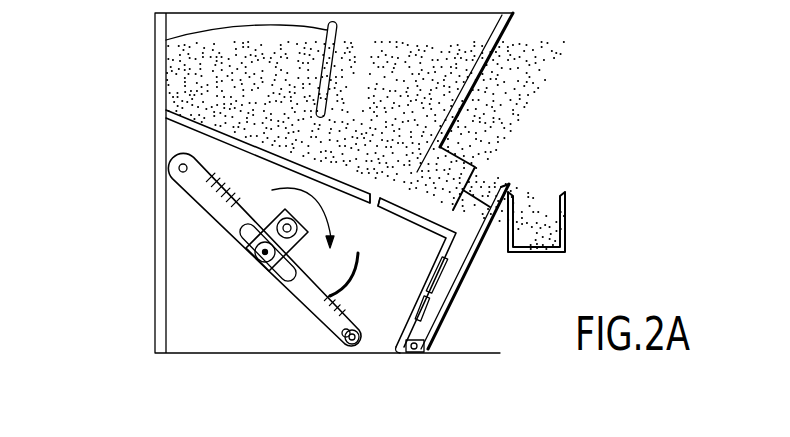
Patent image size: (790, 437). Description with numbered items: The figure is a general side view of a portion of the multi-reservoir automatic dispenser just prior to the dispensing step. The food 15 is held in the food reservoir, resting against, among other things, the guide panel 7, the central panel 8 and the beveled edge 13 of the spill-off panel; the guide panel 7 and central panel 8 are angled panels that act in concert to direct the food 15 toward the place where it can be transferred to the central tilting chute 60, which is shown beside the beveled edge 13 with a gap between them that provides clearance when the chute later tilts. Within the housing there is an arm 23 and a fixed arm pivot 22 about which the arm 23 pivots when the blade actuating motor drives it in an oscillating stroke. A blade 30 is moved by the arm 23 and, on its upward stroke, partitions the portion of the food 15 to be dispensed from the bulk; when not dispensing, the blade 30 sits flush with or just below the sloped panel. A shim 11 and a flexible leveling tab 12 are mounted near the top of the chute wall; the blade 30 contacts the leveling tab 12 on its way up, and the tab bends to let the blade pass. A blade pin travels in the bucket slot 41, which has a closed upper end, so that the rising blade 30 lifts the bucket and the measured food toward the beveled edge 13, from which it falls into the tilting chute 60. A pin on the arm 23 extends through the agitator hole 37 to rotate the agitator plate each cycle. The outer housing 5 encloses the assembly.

The housing 5 is at (155, 283).
The guide panel 7 is at (165, 40).
The central panel 8 is at (497, 48).
The shim 11 is at (462, 150).
The flexible leveling tab 12 is at (480, 186).
The beveled edge 13 is at (505, 184).
The food 15 is at (208, 78).
The fixed arm pivot 22 is at (182, 166).
The arm 23 is at (202, 212).
The blade 30 is at (400, 323).
The agitator hole 37 is at (373, 210).
The bucket slot 41 is at (440, 285).
The central tilting chute 60 is at (567, 231).